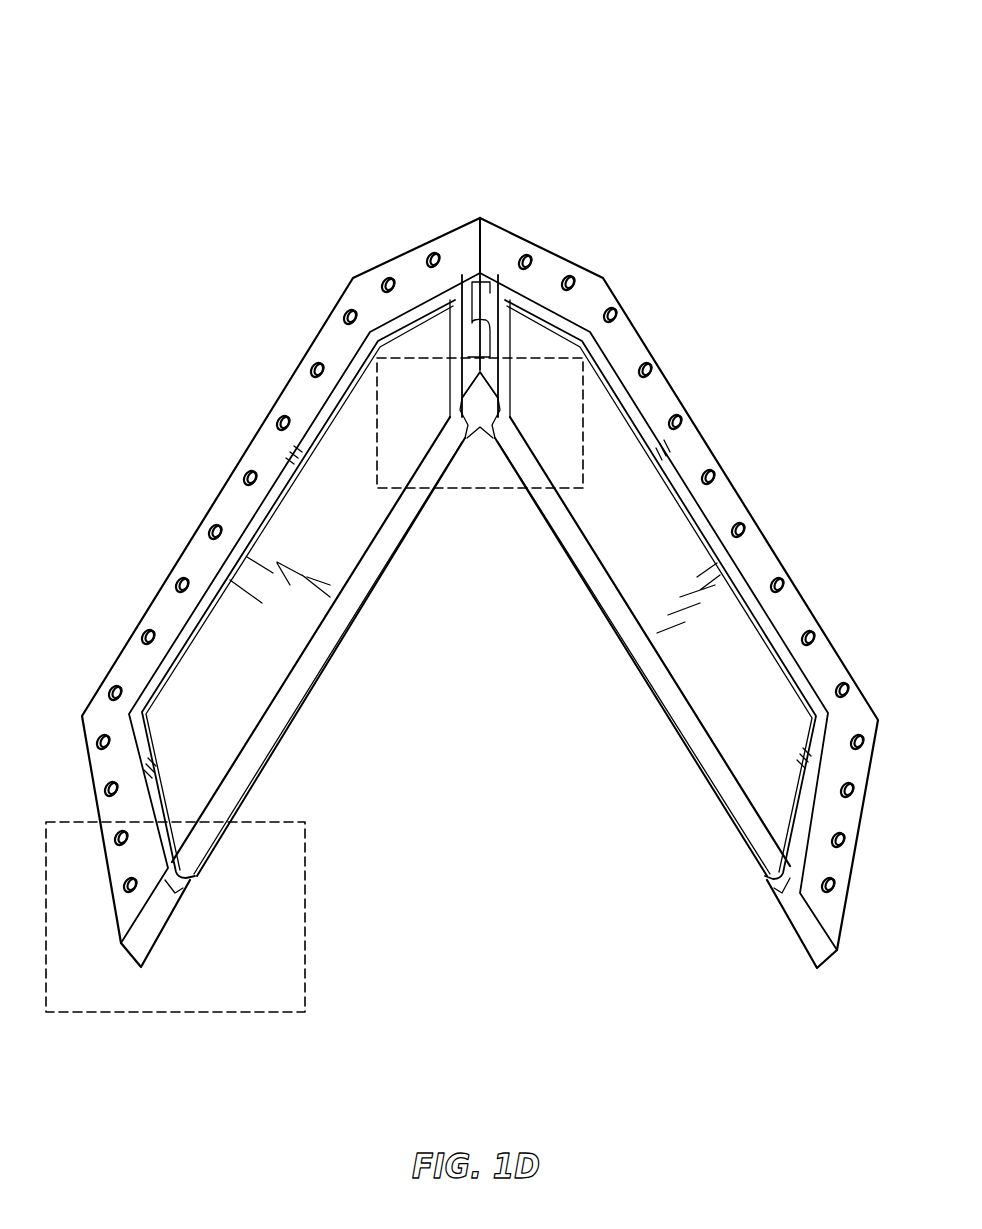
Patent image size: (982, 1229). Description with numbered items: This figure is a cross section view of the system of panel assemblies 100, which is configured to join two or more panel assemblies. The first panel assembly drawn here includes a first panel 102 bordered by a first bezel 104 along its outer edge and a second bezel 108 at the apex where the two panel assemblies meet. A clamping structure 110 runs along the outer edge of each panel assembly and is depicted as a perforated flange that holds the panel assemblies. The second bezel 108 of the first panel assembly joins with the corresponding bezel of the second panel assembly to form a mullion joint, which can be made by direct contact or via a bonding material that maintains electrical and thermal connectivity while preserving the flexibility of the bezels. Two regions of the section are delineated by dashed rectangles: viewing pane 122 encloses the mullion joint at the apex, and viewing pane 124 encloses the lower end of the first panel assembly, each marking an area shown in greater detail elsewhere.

The system of panel assemblies 100 is at (311, 100).
The first panel 102 is at (230, 585).
The first bezel 104 is at (260, 503).
The second bezel 108 is at (477, 268).
The clamping structure 110 is at (300, 397).
The viewing pane 122 is at (480, 489).
The viewing pane 124 is at (187, 1012).